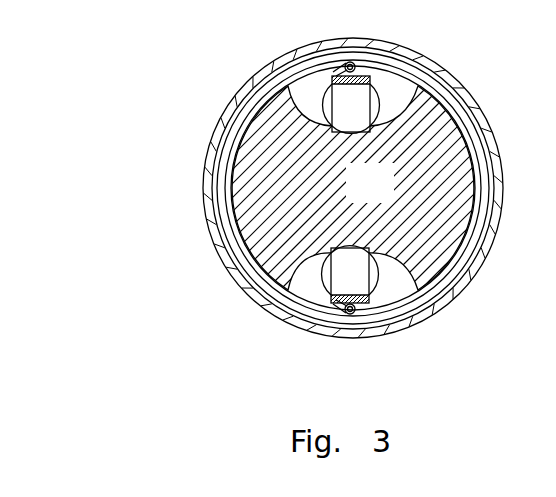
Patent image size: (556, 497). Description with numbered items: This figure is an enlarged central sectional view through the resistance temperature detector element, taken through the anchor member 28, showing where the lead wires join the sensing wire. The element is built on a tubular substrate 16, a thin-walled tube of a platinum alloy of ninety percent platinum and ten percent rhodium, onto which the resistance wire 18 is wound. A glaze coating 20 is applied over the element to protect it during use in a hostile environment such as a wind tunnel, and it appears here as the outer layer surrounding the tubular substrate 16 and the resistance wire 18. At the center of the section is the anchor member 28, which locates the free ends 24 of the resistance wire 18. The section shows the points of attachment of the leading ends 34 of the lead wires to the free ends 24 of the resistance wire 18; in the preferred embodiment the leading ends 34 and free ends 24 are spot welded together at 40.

The tubular substrate 16 is at (227, 207).
The resistance wire 18 is at (240, 116).
The glaze coating 20 is at (501, 184).
The free ends 24 is at (354, 63).
The anchor member 28 is at (383, 199).
The leading ends 34 is at (357, 100).
The spot weld 40 is at (346, 64).